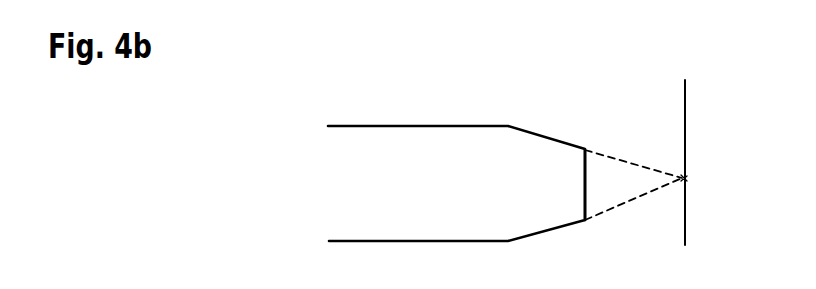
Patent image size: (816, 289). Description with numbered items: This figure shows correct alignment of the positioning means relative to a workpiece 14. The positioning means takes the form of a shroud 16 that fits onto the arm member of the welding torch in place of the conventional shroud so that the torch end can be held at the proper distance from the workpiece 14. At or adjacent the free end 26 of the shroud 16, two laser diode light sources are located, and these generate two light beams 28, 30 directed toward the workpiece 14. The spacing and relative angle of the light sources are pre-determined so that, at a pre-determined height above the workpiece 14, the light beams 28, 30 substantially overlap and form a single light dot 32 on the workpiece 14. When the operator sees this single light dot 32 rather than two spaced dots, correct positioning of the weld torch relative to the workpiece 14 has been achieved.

The workpiece 14 is at (686, 143).
The shroud 16 is at (398, 151).
The free end 26 is at (589, 194).
The light beam 28 is at (628, 162).
The light beam 30 is at (627, 204).
The single light dot 32 is at (686, 180).